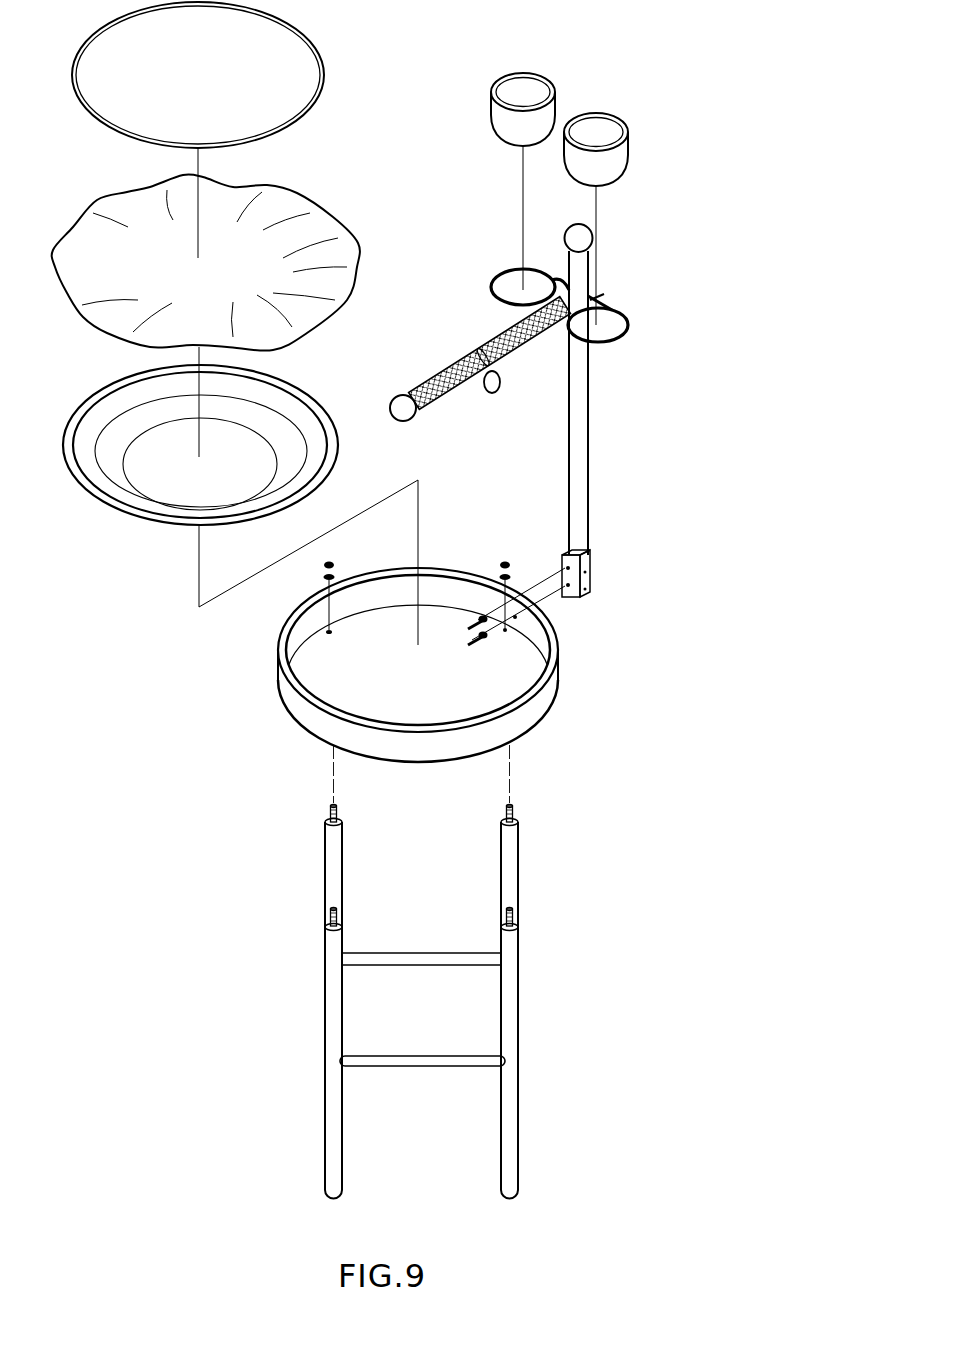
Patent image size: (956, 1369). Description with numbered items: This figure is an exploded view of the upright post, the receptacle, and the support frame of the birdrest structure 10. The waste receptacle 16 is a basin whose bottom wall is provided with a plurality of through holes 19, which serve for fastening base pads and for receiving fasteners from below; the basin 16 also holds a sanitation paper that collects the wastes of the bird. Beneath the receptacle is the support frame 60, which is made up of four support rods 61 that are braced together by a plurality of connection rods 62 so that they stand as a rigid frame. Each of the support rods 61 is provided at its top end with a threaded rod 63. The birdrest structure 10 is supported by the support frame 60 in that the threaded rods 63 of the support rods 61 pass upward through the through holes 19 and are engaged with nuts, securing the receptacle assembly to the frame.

The birdrest structure 10 is at (652, 383).
The waste receptacle 16 is at (548, 688).
The through holes 19 is at (330, 630).
The support frame 60 is at (544, 979).
The support rods 61 is at (513, 1088).
The connection rods 62 is at (386, 1062).
The threaded rod 63 is at (514, 812).